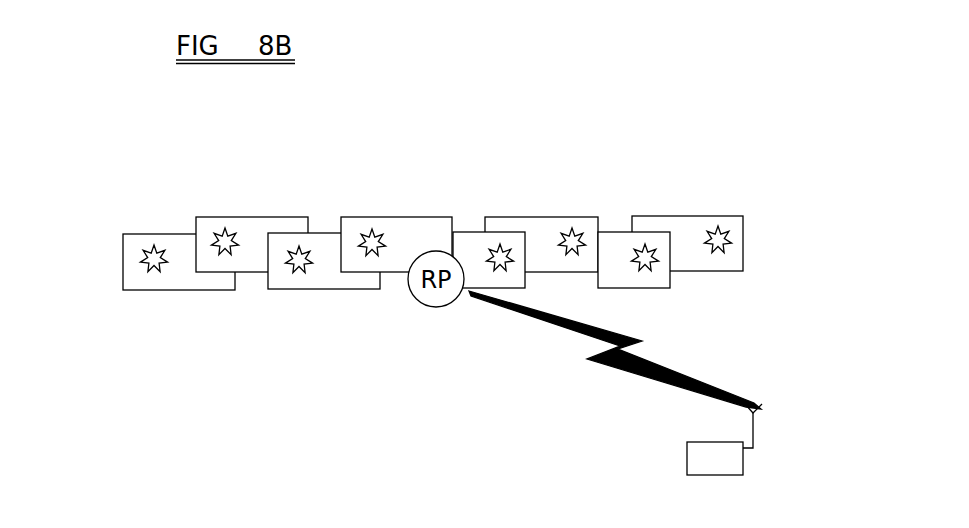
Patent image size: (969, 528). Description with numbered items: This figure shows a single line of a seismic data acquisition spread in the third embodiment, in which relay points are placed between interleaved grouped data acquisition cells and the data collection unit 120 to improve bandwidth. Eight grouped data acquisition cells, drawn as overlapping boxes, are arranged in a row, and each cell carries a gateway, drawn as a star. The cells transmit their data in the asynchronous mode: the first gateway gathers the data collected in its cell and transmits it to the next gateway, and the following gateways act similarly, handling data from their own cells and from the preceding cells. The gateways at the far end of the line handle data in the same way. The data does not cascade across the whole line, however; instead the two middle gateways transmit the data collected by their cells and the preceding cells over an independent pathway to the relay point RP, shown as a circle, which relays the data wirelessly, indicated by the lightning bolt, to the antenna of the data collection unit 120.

The data collection unit 120 is at (687, 456).